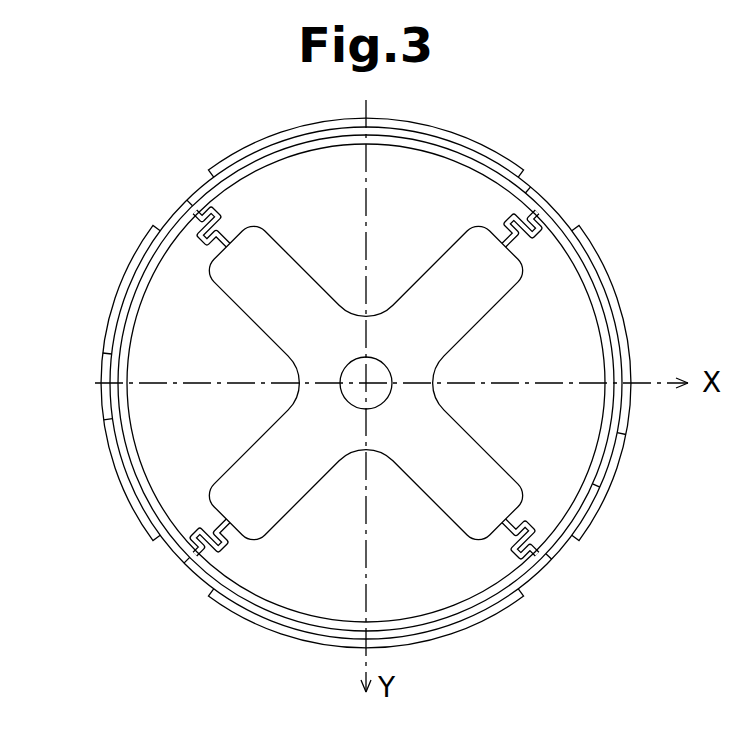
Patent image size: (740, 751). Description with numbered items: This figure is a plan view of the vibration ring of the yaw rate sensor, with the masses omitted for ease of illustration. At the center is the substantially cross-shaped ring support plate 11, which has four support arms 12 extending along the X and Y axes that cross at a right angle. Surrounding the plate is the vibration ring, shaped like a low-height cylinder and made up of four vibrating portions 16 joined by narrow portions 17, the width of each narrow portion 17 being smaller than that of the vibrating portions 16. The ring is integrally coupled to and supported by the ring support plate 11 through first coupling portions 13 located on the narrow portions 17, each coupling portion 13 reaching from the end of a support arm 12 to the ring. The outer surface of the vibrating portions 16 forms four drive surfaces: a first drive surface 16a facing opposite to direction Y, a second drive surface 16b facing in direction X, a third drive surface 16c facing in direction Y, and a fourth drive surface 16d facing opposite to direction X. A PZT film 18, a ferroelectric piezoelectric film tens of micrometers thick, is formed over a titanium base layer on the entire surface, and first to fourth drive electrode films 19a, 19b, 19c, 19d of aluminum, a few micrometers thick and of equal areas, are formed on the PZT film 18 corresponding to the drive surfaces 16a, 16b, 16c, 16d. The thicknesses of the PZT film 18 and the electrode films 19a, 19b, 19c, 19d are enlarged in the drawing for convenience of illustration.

The ring support plate 11 is at (291, 260).
The support arm 12 is at (239, 307).
The first coupling portion 13 is at (224, 212).
The vibrating portion 16 is at (409, 149).
The first drive surface 16a is at (443, 140).
The second drive surface 16b is at (627, 433).
The third drive surface 16c is at (432, 640).
The fourth drive surface 16d is at (104, 354).
The narrow portion 17 is at (188, 200).
The PZT film 18 is at (601, 488).
The first drive electrode film 19a is at (299, 124).
The second drive electrode film 19b is at (622, 310).
The third drive electrode film 19c is at (500, 616).
The fourth drive electrode film 19d is at (103, 422).